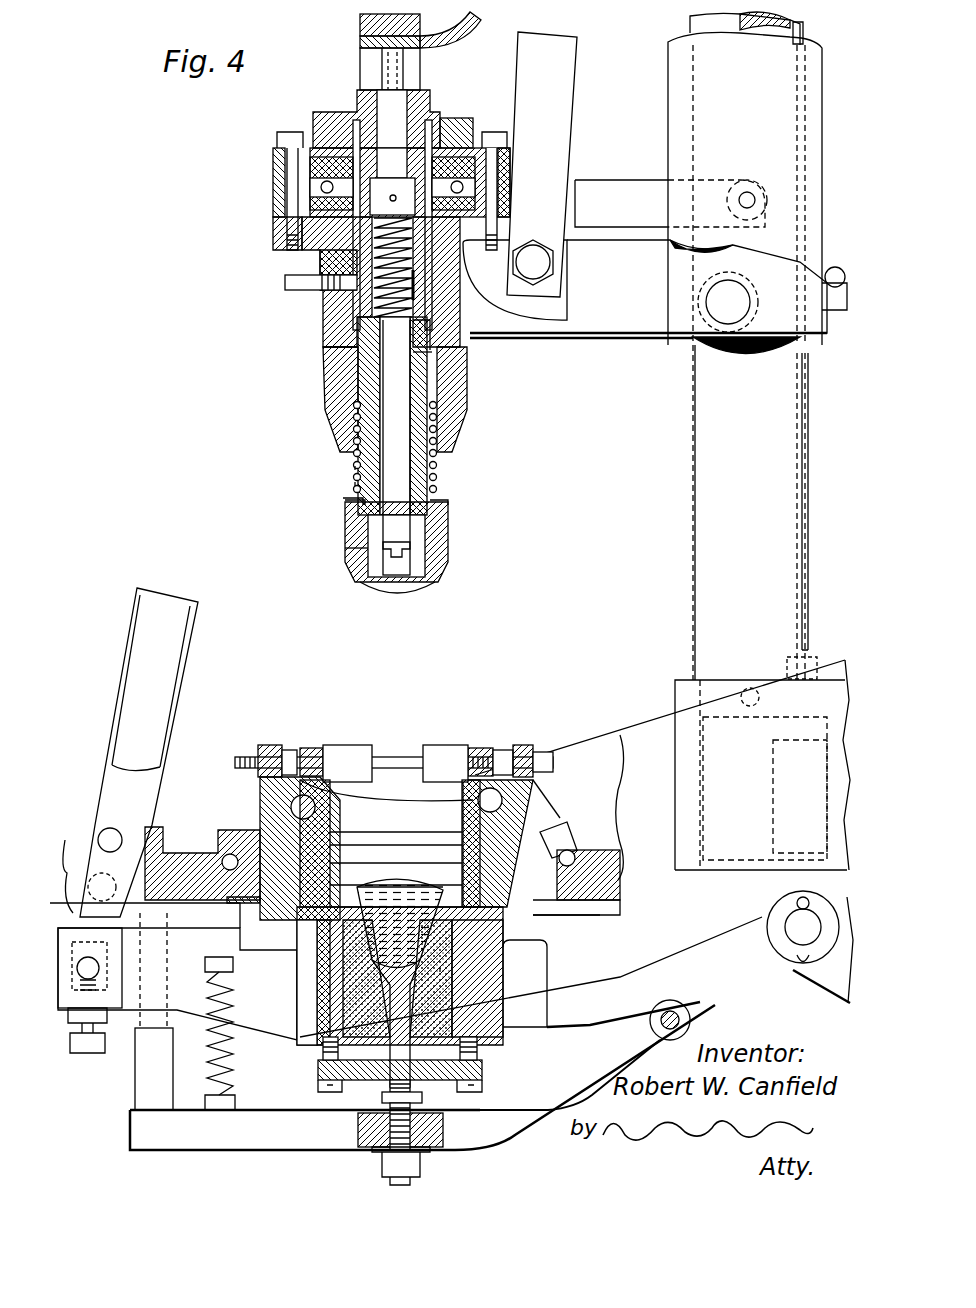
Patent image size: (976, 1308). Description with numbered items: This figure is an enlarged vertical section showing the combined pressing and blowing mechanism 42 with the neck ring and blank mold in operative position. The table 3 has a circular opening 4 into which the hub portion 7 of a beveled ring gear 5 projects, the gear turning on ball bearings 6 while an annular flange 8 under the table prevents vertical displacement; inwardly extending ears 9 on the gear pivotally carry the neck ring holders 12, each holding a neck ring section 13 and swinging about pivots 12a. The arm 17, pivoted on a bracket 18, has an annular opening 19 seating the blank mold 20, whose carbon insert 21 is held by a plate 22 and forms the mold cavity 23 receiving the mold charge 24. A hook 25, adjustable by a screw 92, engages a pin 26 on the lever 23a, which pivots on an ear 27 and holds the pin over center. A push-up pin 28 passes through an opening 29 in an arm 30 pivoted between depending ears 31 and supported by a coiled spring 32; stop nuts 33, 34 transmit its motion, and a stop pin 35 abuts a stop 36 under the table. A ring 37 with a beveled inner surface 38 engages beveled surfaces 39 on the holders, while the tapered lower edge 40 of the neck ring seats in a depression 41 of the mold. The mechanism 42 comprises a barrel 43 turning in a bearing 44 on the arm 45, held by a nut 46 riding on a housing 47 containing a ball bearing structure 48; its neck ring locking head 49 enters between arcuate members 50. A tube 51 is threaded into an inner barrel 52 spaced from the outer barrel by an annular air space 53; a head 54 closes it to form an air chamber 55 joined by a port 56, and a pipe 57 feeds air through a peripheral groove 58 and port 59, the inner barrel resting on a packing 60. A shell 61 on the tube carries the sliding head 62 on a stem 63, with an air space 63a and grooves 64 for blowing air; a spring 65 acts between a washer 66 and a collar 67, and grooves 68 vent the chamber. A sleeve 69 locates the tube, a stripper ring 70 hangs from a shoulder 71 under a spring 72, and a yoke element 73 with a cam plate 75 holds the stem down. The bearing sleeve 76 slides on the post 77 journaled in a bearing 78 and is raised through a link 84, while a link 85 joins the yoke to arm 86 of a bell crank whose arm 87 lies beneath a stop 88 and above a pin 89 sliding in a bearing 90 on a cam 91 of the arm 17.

The table 3 is at (640, 735).
The circular opening 4 is at (173, 971).
The beveled ring gear 5 is at (570, 830).
The ball bearings 6 is at (578, 848).
The hub portion 7 is at (576, 905).
The annular flange 8 is at (565, 912).
The inwardly extending ears 9 is at (260, 830).
The neck ring holders 12 is at (270, 745).
The pivots 12a is at (463, 798).
The neck ring section 13 is at (355, 830).
The arm 17 is at (578, 1015).
The bracket 18 is at (840, 995).
The annular opening 19 is at (320, 990).
The blank mold 20 is at (475, 990).
The replaceable carbon insert 21 is at (440, 968).
The plate 22 is at (484, 1068).
The mold cavity 23 is at (430, 948).
The lever 23a is at (140, 660).
The mold charge 24 is at (412, 898).
The hook 25 is at (117, 830).
The pin 26 is at (105, 838).
The ear 27 is at (65, 850).
The push-up pin 28 is at (390, 1088).
The opening 29 is at (420, 1130).
The arm 30 is at (520, 1140).
The depending ears 31 is at (692, 1008).
The coiled spring 32 is at (235, 1066).
The stop nut 33 is at (422, 1099).
The stop nut 34 is at (372, 1165).
The stop pin 35 is at (134, 1100).
The stop 36 is at (202, 875).
The ring 37 is at (268, 908).
The beveled inner surface 38 is at (325, 830).
The beveled surfaces 39 is at (550, 828).
The tapered lower edge 40 is at (300, 950).
The depression 41 is at (365, 895).
The combined pressing and blowing mechanism 42 is at (536, 432).
The cylindrical barrel 43 is at (345, 325).
The bearing 44 is at (320, 348).
The arm 45 is at (645, 337).
The nut 46 is at (340, 138).
The housing 47 is at (272, 164).
The ball bearing structure 48 is at (321, 188).
The neck ring locking head 49 is at (326, 410).
The arcuate members 50 is at (347, 745).
The tube 51 is at (427, 380).
The barrel 52 is at (432, 352).
The annular air space 53 is at (340, 300).
The head 54 is at (432, 112).
The air chamber 55 is at (462, 125).
The port 56 is at (300, 240).
The pipe 57 is at (283, 287).
The peripheral groove 58 is at (425, 285).
The port 59 is at (318, 262).
The packing 60 is at (330, 368).
The cylindrical shell 61 is at (440, 530).
The head 62 is at (412, 572).
The stem 63 is at (400, 480).
The air space 63a is at (355, 466).
The grooves 64 is at (355, 531).
The spring 65 is at (414, 258).
The washer 66 is at (432, 322).
The collar 67 is at (416, 198).
The grooves 68 is at (403, 60).
The sleeve 69 is at (438, 462).
The stripper ring 70 is at (345, 550).
The annular shoulder 71 is at (345, 504).
The spring 72 is at (355, 482).
The yoke element 73 is at (359, 23).
The cam plate 75 is at (466, 28).
The bearing sleeve 76 is at (667, 113).
The vertical post 77 is at (694, 432).
The bearing 78 is at (674, 770).
The link 84 is at (566, 67).
The link 85 is at (620, 180).
The bell crank arm 86 is at (698, 250).
The bell crank arm 87 is at (842, 312).
The stop 88 is at (826, 272).
The pin 89 is at (786, 662).
The bearing 90 is at (772, 795).
The cam 91 is at (785, 895).
The screw 92 is at (88, 1055).